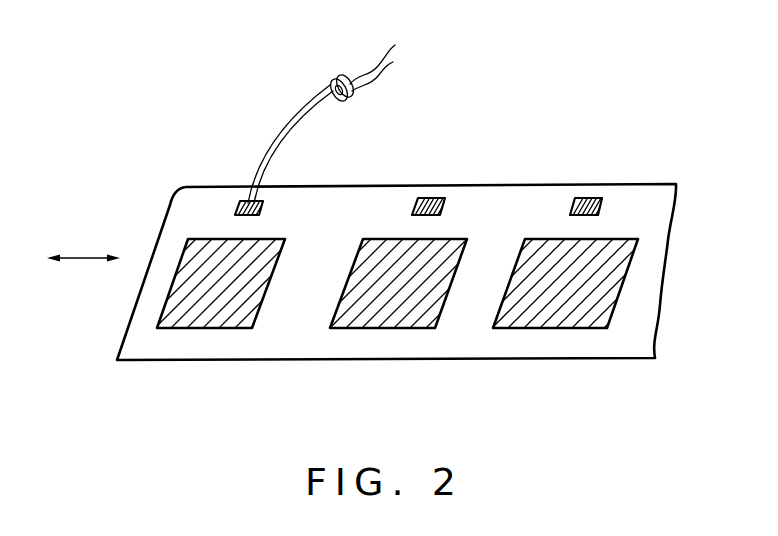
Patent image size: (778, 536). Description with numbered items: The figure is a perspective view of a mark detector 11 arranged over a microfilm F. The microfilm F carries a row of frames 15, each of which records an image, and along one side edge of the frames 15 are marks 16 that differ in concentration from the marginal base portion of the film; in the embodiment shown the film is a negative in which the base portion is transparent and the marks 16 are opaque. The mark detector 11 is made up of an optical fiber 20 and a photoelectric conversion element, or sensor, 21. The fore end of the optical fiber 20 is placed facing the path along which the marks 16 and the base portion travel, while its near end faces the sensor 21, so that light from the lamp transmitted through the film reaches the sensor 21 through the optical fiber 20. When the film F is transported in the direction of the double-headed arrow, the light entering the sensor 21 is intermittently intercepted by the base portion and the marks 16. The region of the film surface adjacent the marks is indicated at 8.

The microfilm F is at (478, 360).
The frames 15 is at (208, 330).
The marks 16 is at (262, 205).
The film web 8 is at (390, 208).
The mark detector 11 is at (324, 112).
The optical fiber 20 is at (277, 132).
The photoelectric conversion element 21 is at (356, 95).